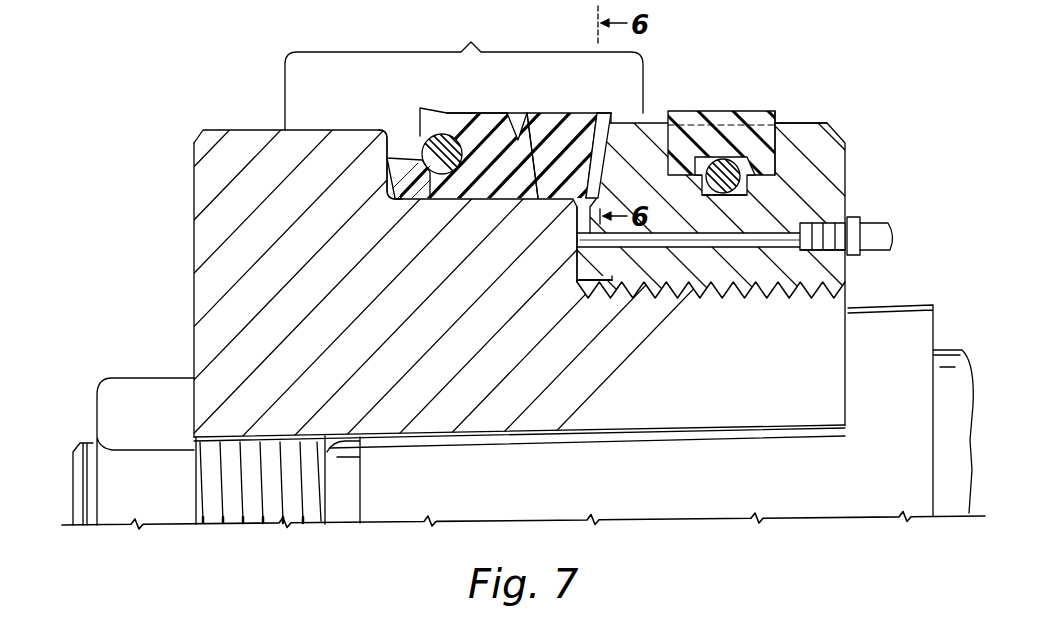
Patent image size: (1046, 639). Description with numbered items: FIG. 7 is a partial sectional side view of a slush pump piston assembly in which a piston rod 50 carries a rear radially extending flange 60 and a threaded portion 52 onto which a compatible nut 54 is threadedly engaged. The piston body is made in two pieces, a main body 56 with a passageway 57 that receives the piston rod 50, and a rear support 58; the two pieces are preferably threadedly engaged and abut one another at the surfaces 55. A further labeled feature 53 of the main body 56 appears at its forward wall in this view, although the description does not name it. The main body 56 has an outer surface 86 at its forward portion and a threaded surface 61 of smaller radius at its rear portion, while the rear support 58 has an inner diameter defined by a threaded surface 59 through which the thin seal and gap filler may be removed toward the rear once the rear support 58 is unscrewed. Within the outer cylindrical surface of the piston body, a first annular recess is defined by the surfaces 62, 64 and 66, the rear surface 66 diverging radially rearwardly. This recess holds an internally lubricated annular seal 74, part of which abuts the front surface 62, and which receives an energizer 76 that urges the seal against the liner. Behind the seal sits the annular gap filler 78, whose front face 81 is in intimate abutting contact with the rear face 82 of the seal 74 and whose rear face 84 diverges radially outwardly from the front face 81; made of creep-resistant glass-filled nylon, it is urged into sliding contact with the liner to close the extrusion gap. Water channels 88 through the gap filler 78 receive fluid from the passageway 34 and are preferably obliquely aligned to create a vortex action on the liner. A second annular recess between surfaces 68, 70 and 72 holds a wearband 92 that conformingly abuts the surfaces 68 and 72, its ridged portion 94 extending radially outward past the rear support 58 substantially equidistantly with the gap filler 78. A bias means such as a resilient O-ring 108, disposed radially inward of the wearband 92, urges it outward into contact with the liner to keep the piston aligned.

The passageway 34 is at (776, 232).
The piston rod 50 is at (710, 490).
The threaded portion 52 is at (83, 525).
The side wall 53 is at (195, 283).
The nut 54 is at (155, 380).
The surfaces 55 is at (575, 272).
The main body 56 is at (213, 228).
The passageway 57 is at (337, 455).
The rear support 58 is at (833, 127).
The threaded surface 59 is at (810, 283).
The rear radially extending flange 60 is at (877, 500).
The threaded surface 61 is at (817, 250).
The front surface 62 is at (388, 136).
The surface 64 is at (403, 155).
The rear surface 66 is at (573, 148).
The surface 68 is at (680, 125).
The surface 70 is at (697, 137).
The surface 72 is at (763, 140).
The annular seal 74 is at (462, 128).
The energizer 76 is at (440, 133).
The gap filler 78 is at (560, 135).
The front face 81 is at (514, 133).
The rear face 82 is at (537, 125).
The rear face 84 is at (618, 130).
The outer surface 86 is at (464, 71).
The water channels 88 is at (612, 125).
The wearband 92 is at (717, 117).
The ridges 94 is at (777, 115).
The resilient O-ring 108 is at (730, 157).